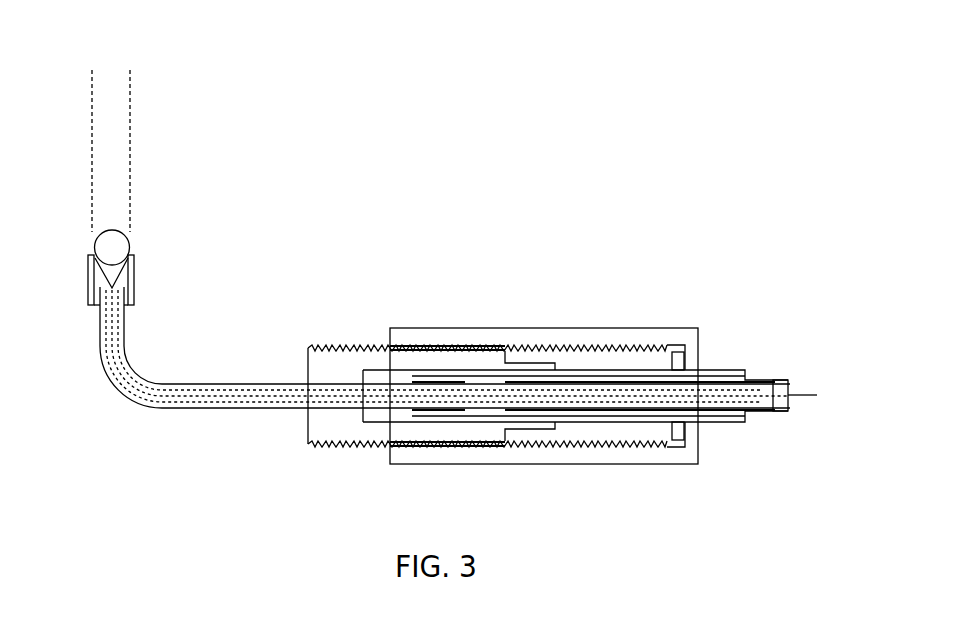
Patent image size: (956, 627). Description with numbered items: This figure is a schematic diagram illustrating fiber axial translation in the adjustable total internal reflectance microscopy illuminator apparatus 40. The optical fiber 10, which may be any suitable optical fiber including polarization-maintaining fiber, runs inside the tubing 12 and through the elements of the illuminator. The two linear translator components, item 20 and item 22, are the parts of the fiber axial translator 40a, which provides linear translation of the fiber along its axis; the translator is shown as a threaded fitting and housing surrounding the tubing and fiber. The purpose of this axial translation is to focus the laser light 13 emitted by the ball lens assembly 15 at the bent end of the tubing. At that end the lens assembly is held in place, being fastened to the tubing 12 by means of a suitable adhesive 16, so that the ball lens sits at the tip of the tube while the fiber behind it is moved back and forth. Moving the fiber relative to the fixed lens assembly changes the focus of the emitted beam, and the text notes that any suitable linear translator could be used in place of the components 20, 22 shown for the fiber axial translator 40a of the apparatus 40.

The optical fiber 10 is at (797, 392).
The tubing 12 is at (213, 384).
The laser light 13 is at (130, 123).
The ball lens assembly 15 is at (129, 243).
The lens assembly adhesive 16 is at (94, 303).
The linear translator component 20 is at (623, 327).
The linear translator component 22 is at (333, 345).
The adjustable TIRFM illuminator apparatus 40 is at (533, 264).
The fiber axial translator 40a is at (670, 323).